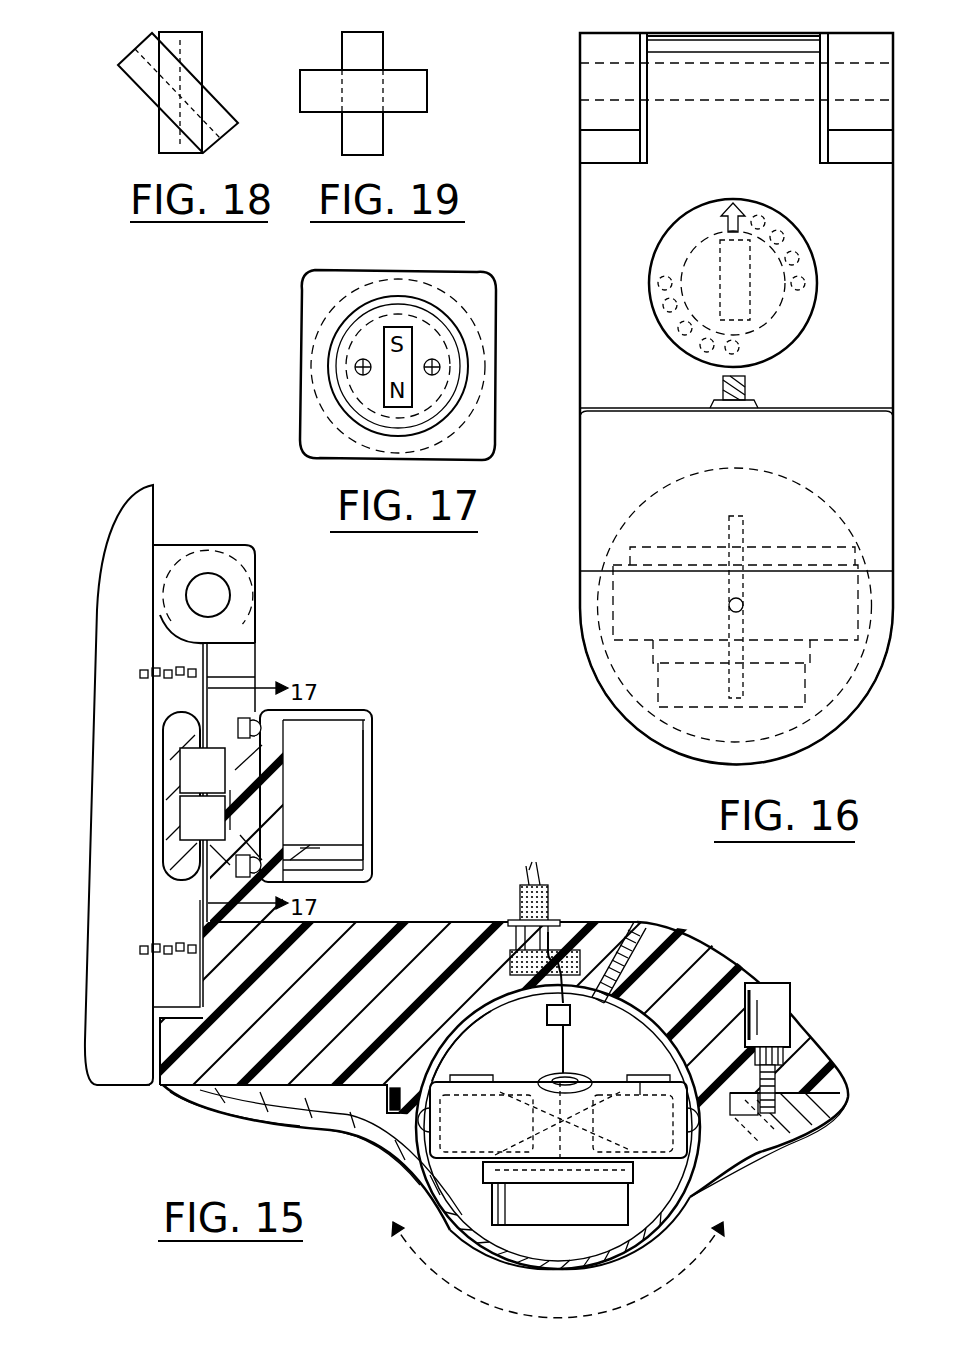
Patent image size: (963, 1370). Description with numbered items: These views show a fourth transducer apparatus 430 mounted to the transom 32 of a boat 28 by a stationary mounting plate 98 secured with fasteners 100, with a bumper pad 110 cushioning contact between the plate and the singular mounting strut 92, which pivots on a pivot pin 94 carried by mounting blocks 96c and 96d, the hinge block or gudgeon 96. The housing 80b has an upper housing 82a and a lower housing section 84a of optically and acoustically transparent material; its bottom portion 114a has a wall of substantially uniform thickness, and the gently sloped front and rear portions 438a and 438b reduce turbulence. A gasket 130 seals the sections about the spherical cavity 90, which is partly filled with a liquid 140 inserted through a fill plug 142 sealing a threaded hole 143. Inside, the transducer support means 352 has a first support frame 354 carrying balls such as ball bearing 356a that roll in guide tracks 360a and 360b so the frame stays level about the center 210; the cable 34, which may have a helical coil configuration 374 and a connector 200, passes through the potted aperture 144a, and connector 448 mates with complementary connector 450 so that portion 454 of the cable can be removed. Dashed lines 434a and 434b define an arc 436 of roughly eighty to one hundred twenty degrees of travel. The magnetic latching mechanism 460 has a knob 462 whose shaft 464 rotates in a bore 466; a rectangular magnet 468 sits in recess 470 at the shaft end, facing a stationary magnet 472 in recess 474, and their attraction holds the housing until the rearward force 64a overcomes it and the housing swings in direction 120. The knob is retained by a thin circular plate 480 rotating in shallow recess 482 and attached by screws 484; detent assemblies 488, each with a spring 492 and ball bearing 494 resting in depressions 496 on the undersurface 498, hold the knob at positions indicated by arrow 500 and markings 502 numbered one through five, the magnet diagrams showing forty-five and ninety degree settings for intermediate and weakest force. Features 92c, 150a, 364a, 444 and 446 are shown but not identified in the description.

In FIG. 15, the boat 28 is at (105, 1090).
In FIG. 15, the transom 32 is at (157, 512).
In FIG. 15, the cable 34 is at (503, 900).
In FIG. 15, the rearward force arrow 64a is at (395, 1180).
In FIG. 16, the housing 80b is at (572, 600).
In FIG. 15, the housing 80b is at (875, 1082).
In FIG. 16, the upper housing 82a is at (592, 530).
In FIG. 15, the upper housing 82a is at (820, 1030).
In FIG. 16, the lower housing section 84a is at (582, 648).
In FIG. 15, the lower housing section 84a is at (770, 1148).
In FIG. 16, the spherical cavity 90 is at (872, 680).
In FIG. 15, the spherical cavity 90 is at (482, 1244).
In FIG. 17, the mounting strut 92 is at (306, 284).
In FIG. 16, the mounting strut 92 is at (893, 268).
In FIG. 15, the mounting strut 92 is at (262, 660).
In FIG. 16, the bracket top wall 92c is at (734, 44).
In FIG. 16, the pivot pin 94 is at (578, 80).
In FIG. 15, the pivot pin 94 is at (222, 590).
In FIG. 15, the hinge block 96 is at (215, 548).
In FIG. 16, the mounting block 96c is at (622, 40).
In FIG. 16, the mounting block 96d is at (855, 45).
In FIG. 15, the mounting plate 98 is at (188, 994).
In FIG. 15, the fasteners 100 is at (154, 696).
In FIG. 15, the bumper pad 110 is at (160, 1014).
In FIG. 15, the lower housing portion 114a is at (598, 1271).
In FIG. 15, the swing direction arrow 120 is at (722, 946).
In FIG. 15, the gasket 130 is at (558, 1116).
In FIG. 16, the liquid 140 is at (792, 552).
In FIG. 15, the liquid 140 is at (640, 1081).
In FIG. 15, the fill plug 142 is at (628, 935).
In FIG. 15, the threaded hole 143 is at (648, 935).
In FIG. 15, the cable aperture 144a is at (508, 928).
In FIG. 15, the circuit board 150a is at (606, 1211).
In FIG. 15, the connector 200 is at (600, 1130).
In FIG. 15, the center point 210 is at (525, 1119).
In FIG. 15, the transducer support means 352 is at (710, 1193).
In FIG. 16, the first support frame 354 is at (868, 600).
In FIG. 15, the first support frame 354 is at (418, 1068).
In FIG. 15, the ball bearing 356a is at (398, 1142).
In FIG. 15, the guide track 360a is at (442, 1025).
In FIG. 15, the guide track 360b is at (752, 985).
In FIG. 16, the partition 364a is at (841, 552).
In FIG. 15, the partition 364a is at (476, 1082).
In FIG. 15, the helical coil configuration 374 is at (602, 1104).
In FIG. 15, the transducer apparatus 430 is at (832, 925).
In FIG. 15, the radial dashed line 434a is at (380, 1240).
In FIG. 15, the radial dashed line 434b is at (745, 1222).
In FIG. 15, the arc 436 is at (662, 1292).
In FIG. 15, the front portion 438a is at (278, 1122).
In FIG. 15, the rear portion 438b is at (822, 1132).
In FIG. 15, the sensor lead 444 is at (545, 890).
In FIG. 15, the sensor arm 446 is at (568, 945).
In FIG. 15, the electrical connector 448 is at (571, 1015).
In FIG. 15, the complementary electrical connector 450 is at (546, 1013).
In FIG. 15, the cable portion 454 is at (566, 1055).
In FIG. 15, the magnetic latching mechanism 460 is at (388, 765).
In FIG. 17, the knob 462 is at (430, 284).
In FIG. 15, the knob 462 is at (370, 714).
In FIG. 15, the shaft 464 is at (262, 738).
In FIG. 17, the bore 466 is at (352, 345).
In FIG. 15, the bore 466 is at (250, 836).
In FIG. 18, the rectangular magnet 468 is at (207, 98).
In FIG. 19, the rectangular magnet 468 is at (331, 113).
In FIG. 16, the rectangular magnet 468 is at (770, 320).
In FIG. 15, the rectangular magnet 468 is at (212, 800).
In FIG. 15, the recess 470 is at (240, 778).
In FIG. 18, the stationary rectangular magnet 472 is at (160, 118).
In FIG. 19, the stationary rectangular magnet 472 is at (387, 52).
In FIG. 15, the stationary rectangular magnet 472 is at (178, 758).
In FIG. 15, the recess 474 is at (163, 795).
In FIG. 17, the thin circular plate 480 is at (442, 405).
In FIG. 15, the thin circular plate 480 is at (175, 848).
In FIG. 17, the shallow circular recess 482 is at (337, 395).
In FIG. 15, the shallow circular recess 482 is at (236, 866).
In FIG. 17, the screws 484 is at (354, 366).
In FIG. 15, the detent assemblies 488 is at (318, 850).
In FIG. 15, the spring 492 is at (245, 872).
In FIG. 15, the ball bearing 494 is at (300, 862).
In FIG. 16, the depressions 496 is at (770, 243).
In FIG. 16, the undersurface 498 is at (798, 303).
In FIG. 16, the arrow 500 is at (738, 216).
In FIG. 16, the markings 502 is at (625, 302).